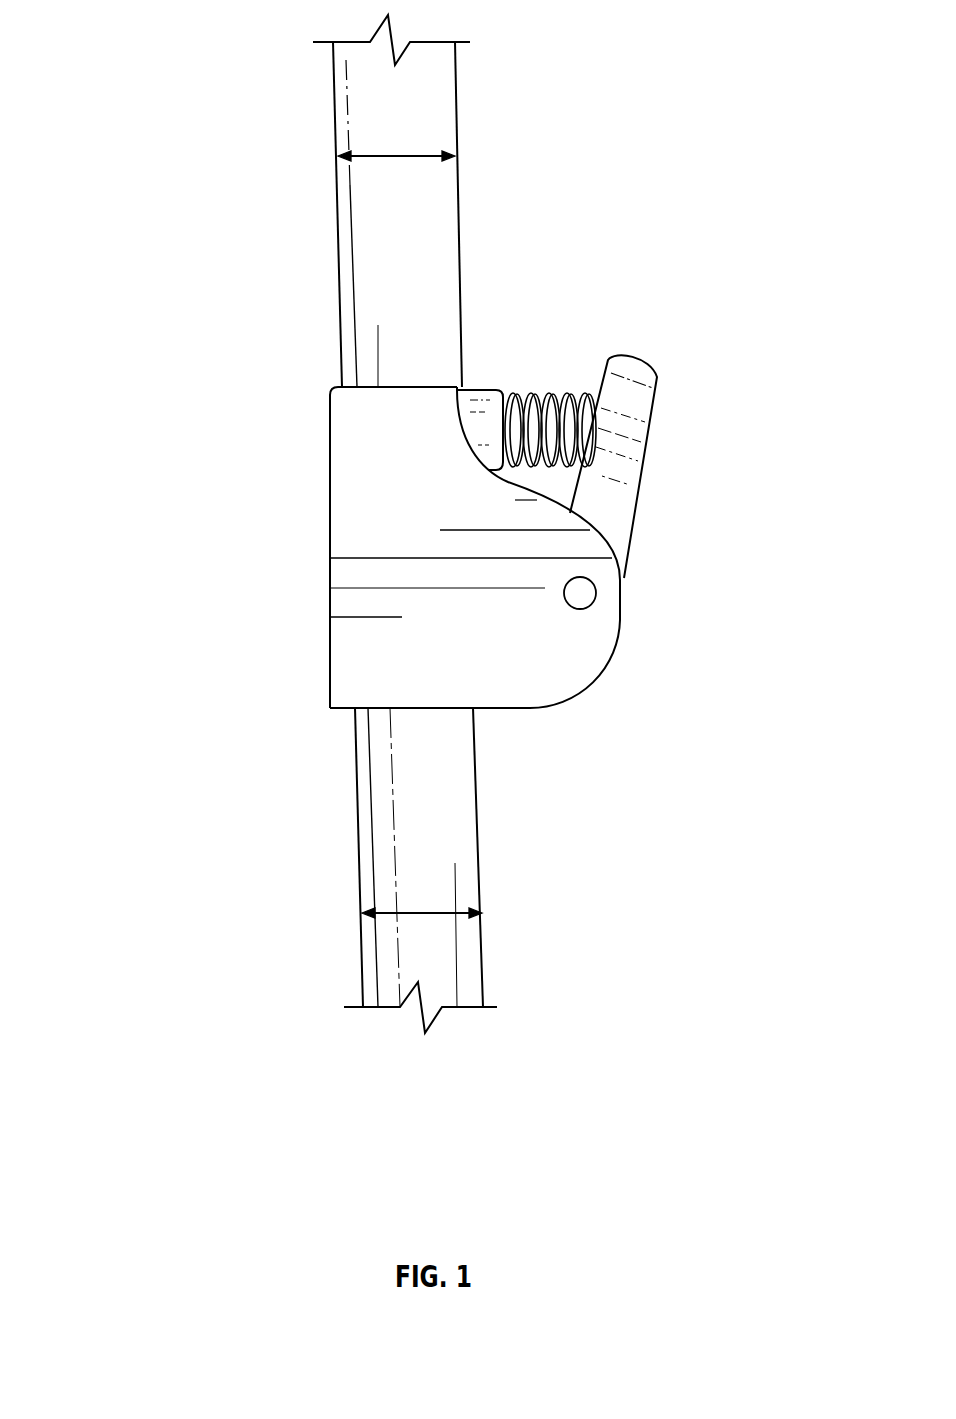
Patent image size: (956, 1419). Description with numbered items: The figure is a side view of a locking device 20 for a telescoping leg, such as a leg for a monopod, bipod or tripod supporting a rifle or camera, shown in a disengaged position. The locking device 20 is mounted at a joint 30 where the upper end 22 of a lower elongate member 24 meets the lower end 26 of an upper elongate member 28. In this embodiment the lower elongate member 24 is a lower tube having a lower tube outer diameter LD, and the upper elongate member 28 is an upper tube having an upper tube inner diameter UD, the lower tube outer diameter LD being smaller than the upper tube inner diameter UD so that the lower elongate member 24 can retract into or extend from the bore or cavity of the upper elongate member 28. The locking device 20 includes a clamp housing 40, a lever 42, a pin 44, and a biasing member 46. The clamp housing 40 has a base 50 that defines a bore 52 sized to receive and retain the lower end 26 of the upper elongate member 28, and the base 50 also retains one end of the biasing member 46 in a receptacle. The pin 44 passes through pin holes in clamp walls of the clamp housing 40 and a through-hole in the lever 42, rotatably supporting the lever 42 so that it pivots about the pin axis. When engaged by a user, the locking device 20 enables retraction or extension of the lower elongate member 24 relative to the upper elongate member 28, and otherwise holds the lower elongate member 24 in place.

The locking device 20 is at (233, 566).
The upper end 22 is at (367, 723).
The lower elongate member 24 is at (358, 952).
The lower end 26 is at (366, 364).
The upper elongate member 28 is at (338, 222).
The joint 30 is at (325, 492).
The clamp housing 40 is at (336, 645).
The lever 42 is at (617, 454).
The pin 44 is at (586, 594).
The biasing member 46 is at (554, 393).
The base 50 is at (355, 416).
The bore 52 is at (413, 384).
The upper tube inner diameter UD is at (431, 155).
The lower tube outer diameter LD is at (432, 912).